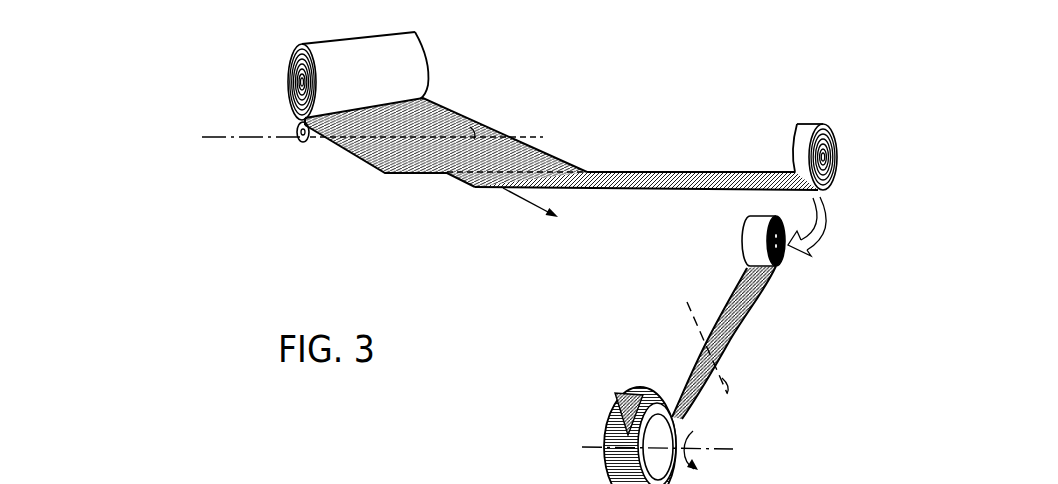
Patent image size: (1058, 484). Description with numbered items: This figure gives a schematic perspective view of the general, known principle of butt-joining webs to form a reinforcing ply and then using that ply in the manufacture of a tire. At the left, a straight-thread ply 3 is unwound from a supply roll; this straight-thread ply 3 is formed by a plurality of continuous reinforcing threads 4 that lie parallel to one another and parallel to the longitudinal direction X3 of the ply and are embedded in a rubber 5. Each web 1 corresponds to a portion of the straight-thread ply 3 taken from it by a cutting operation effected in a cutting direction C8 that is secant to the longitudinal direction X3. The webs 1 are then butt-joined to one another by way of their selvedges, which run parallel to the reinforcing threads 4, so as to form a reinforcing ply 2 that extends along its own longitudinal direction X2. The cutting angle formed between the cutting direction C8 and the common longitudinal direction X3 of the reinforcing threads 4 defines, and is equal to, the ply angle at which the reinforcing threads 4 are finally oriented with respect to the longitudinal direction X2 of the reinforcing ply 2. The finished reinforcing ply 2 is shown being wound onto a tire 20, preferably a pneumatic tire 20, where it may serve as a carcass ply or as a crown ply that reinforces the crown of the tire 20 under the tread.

The web 1 is at (530, 163).
The reinforcing ply 2 is at (655, 157).
The straight-thread ply 3 is at (435, 90).
The reinforcing threads 4 is at (439, 121).
The rubber 5 is at (385, 174).
The tire 20 is at (597, 415).
The cutting direction C8 is at (230, 137).
The longitudinal direction of the reinforcing ply X2 is at (690, 370).
The longitudinal direction of the straight-thread ply X3 is at (533, 204).